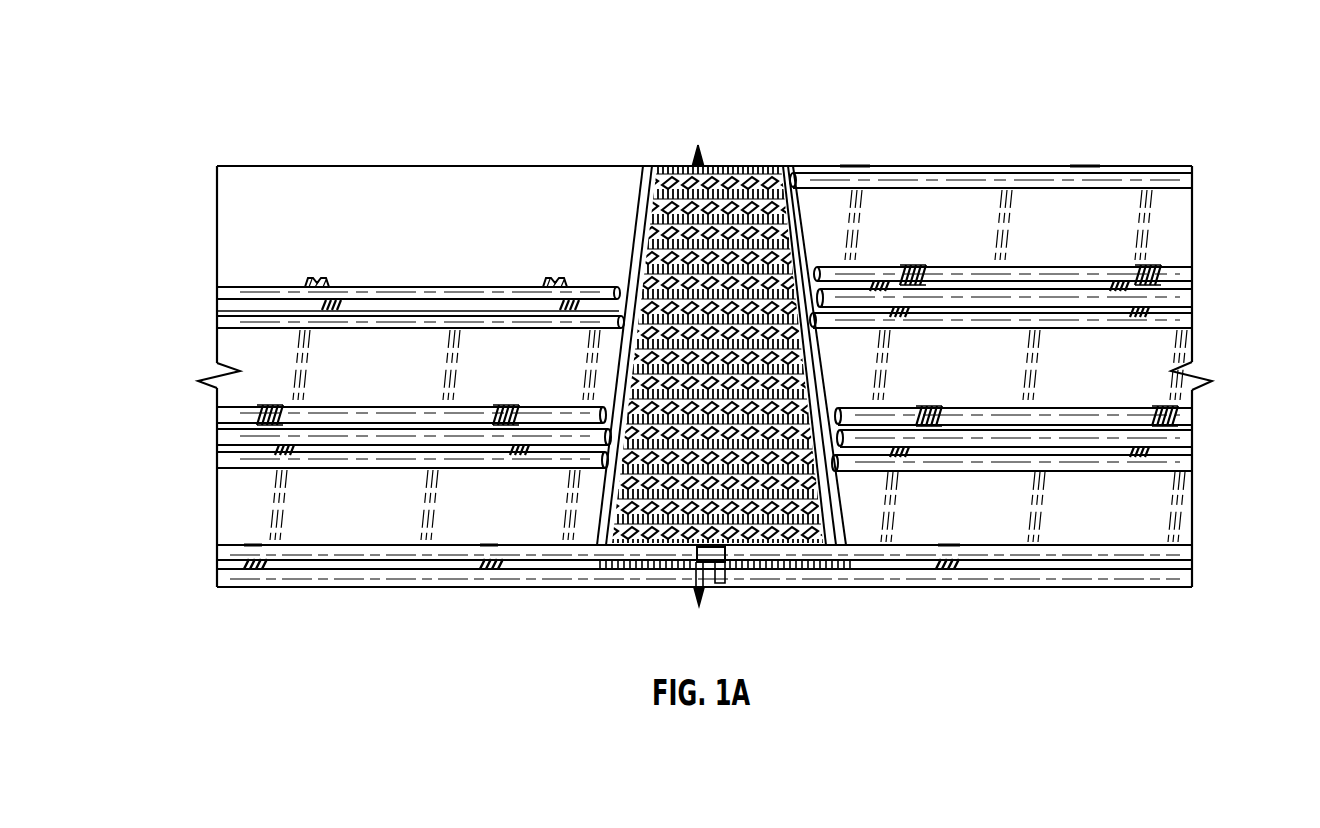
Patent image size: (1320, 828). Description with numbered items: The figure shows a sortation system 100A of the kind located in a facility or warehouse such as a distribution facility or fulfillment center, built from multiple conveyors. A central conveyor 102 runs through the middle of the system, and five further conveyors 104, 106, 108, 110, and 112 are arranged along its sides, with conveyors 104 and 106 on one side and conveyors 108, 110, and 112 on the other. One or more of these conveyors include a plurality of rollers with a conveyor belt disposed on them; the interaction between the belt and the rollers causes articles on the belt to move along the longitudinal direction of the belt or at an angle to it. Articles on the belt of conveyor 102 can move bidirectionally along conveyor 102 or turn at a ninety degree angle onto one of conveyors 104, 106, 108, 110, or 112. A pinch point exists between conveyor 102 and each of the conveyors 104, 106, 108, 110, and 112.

The sortation system 100A is at (217, 66).
The conveyor 102 is at (750, 186).
The conveyor 104 is at (242, 355).
The conveyor 106 is at (232, 513).
The conveyor 108 is at (1175, 235).
The conveyor 110 is at (1177, 355).
The conveyor 112 is at (1150, 517).